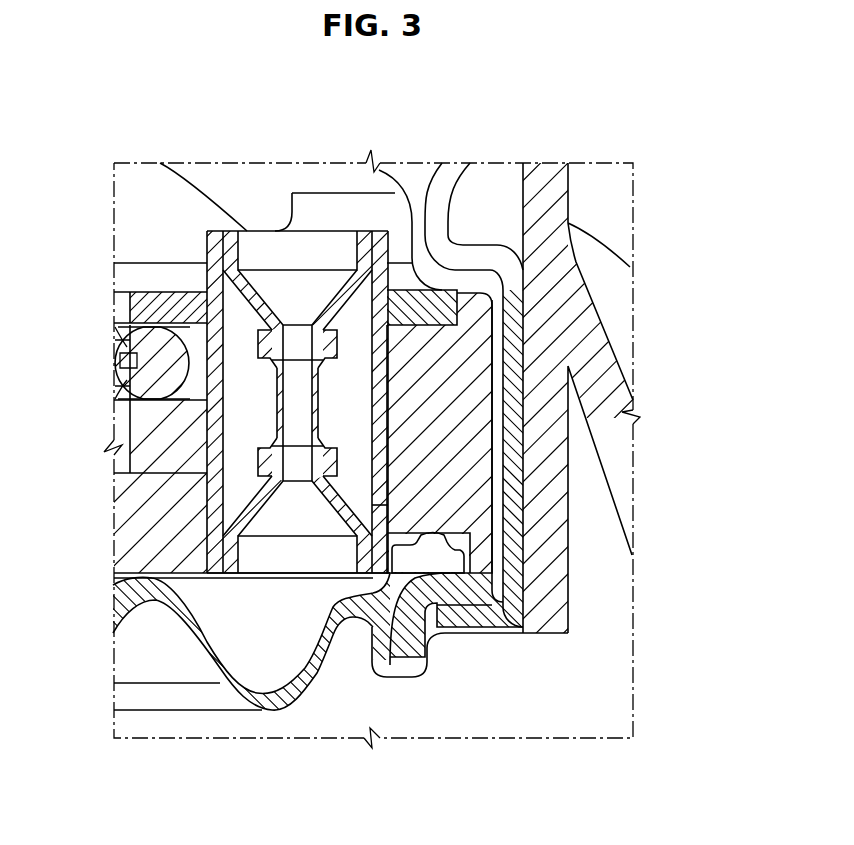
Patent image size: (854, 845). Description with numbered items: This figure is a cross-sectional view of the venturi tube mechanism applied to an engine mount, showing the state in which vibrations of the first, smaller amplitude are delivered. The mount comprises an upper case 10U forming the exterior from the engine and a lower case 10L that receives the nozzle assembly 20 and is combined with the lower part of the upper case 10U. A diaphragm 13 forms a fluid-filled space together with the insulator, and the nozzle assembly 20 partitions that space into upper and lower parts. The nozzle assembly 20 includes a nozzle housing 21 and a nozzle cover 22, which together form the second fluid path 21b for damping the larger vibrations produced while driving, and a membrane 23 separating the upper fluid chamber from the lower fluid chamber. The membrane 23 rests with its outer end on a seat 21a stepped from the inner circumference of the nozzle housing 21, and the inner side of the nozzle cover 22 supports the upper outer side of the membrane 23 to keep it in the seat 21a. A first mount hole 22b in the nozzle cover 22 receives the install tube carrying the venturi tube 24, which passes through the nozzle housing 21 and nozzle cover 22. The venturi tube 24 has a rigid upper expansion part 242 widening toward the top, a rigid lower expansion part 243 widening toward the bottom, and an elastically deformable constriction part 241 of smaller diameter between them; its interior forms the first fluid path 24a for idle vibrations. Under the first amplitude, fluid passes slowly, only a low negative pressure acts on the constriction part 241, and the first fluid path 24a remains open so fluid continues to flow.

The upper case 10U is at (568, 193).
The lower case 10L is at (521, 580).
The diaphragm 13 is at (293, 708).
The nozzle assembly 20 is at (492, 362).
The nozzle housing 21 is at (473, 413).
The seat 21a is at (122, 386).
The second fluid path 21b is at (376, 505).
The nozzle cover 22 is at (480, 293).
The first mount hole 22b is at (367, 247).
The membrane 23 is at (137, 356).
The venturi tube 24 is at (216, 344).
The first fluid path 24a is at (283, 397).
The constriction part 241 is at (297, 428).
The upper expansion part 242 is at (233, 313).
The lower expansion part 243 is at (227, 550).